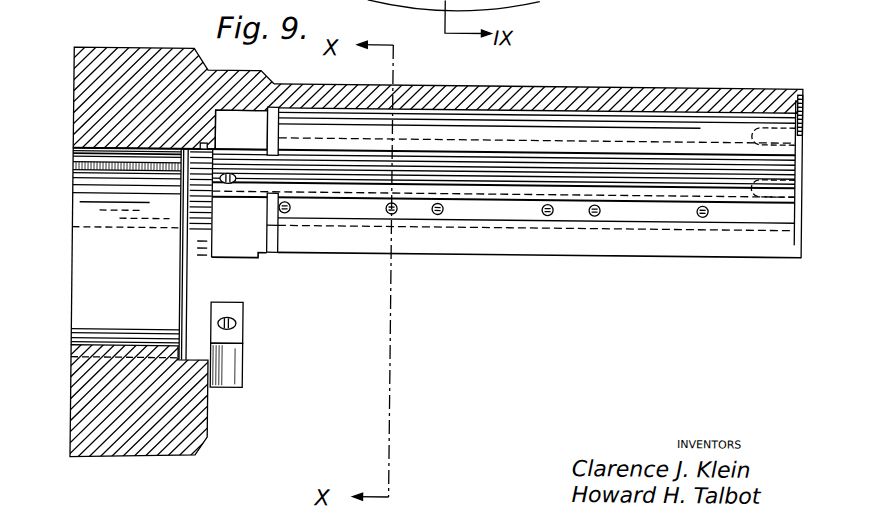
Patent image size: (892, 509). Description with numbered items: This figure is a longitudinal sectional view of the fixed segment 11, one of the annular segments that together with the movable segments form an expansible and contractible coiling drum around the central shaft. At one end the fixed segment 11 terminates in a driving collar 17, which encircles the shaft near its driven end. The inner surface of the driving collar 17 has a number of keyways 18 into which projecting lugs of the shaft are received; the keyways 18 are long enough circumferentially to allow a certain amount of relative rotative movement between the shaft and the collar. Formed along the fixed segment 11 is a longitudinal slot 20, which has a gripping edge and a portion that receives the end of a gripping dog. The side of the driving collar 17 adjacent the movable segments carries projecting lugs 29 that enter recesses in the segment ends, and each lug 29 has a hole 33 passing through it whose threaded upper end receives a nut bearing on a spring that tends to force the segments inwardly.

The fixed segment 11 is at (607, 94).
The driving collar 17 is at (123, 50).
The keyways 18 is at (76, 172).
The longitudinal slot 20 is at (541, 107).
The projecting lugs 29 is at (237, 364).
The hole 33 is at (245, 325).